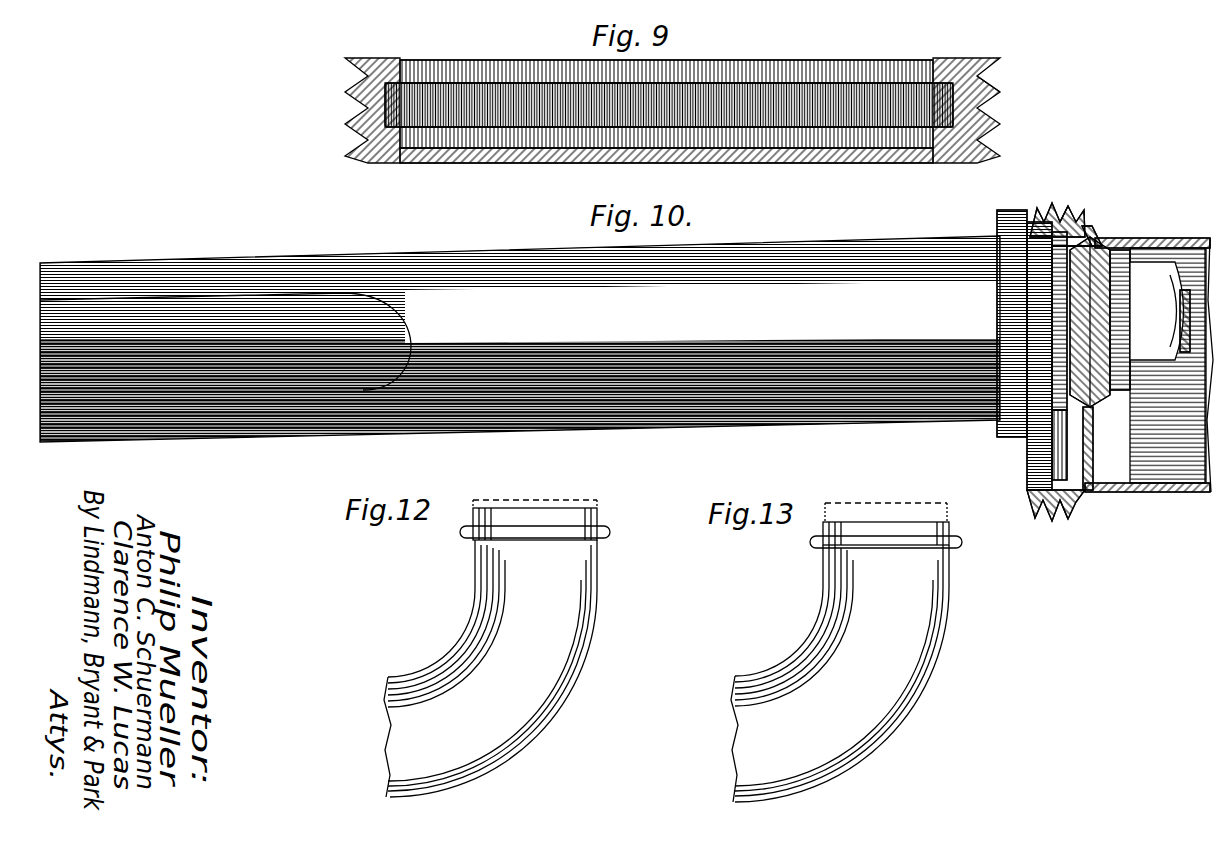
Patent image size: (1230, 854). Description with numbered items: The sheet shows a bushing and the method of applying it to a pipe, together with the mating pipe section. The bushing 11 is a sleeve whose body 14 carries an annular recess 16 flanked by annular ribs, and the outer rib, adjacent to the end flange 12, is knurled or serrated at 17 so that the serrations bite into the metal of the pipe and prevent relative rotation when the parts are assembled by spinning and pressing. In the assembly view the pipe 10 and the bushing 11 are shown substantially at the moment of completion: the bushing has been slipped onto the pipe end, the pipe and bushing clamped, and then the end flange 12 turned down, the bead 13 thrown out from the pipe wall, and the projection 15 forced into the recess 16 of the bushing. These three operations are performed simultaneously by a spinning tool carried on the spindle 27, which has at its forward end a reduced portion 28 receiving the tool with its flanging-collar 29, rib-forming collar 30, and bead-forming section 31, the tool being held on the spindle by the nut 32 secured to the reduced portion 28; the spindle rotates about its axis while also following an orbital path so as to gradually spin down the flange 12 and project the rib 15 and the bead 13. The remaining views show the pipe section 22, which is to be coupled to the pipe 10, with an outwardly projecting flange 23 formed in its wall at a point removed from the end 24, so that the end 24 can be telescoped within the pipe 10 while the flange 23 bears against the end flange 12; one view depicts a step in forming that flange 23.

In FIG. 10, the pipe 10 is at (1165, 492).
In FIG. 9, the bushing 11 is at (375, 130).
In FIG. 10, the bushing 11 is at (1075, 516).
In FIG. 10, the end flange 12 is at (1024, 500).
In FIG. 10, the bead 13 is at (1094, 238).
In FIG. 9, the sleeve body 14 is at (492, 160).
In FIG. 10, the projection 15 is at (1078, 199).
In FIG. 9, the annular recess 16 is at (988, 102).
In FIG. 10, the annular recess 16 is at (1050, 515).
In FIG. 9, the serrations 17 is at (405, 72).
In FIG. 10, the serrations 17 is at (1057, 205).
In FIG. 12, the pipe section 22 is at (607, 646).
In FIG. 13, the pipe section 22 is at (932, 676).
In FIG. 12, the flange 23 is at (610, 540).
In FIG. 13, the flange 23 is at (958, 548).
In FIG. 12, the end 24 is at (600, 513).
In FIG. 13, the end 24 is at (952, 526).
In FIG. 10, the spindle 27 is at (813, 252).
In FIG. 10, the reduced portion 28 is at (1138, 242).
In FIG. 10, the flanging-collar 29 is at (981, 321).
In FIG. 10, the rib-forming collar 30 is at (1055, 292).
In FIG. 10, the bead-forming section 31 is at (1104, 395).
In FIG. 10, the nut 32 is at (1160, 378).